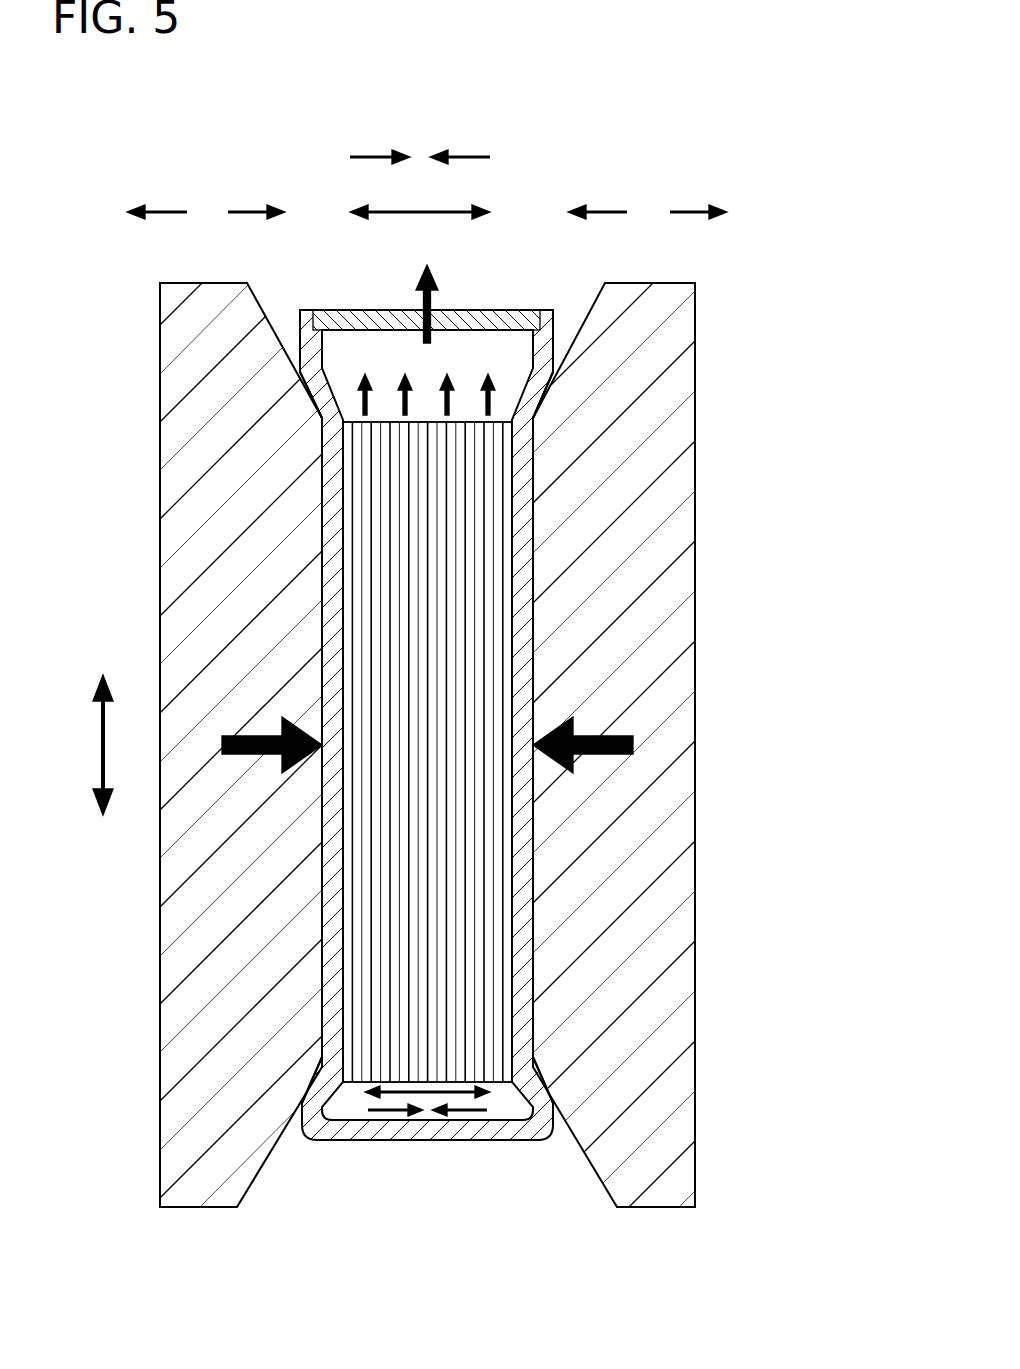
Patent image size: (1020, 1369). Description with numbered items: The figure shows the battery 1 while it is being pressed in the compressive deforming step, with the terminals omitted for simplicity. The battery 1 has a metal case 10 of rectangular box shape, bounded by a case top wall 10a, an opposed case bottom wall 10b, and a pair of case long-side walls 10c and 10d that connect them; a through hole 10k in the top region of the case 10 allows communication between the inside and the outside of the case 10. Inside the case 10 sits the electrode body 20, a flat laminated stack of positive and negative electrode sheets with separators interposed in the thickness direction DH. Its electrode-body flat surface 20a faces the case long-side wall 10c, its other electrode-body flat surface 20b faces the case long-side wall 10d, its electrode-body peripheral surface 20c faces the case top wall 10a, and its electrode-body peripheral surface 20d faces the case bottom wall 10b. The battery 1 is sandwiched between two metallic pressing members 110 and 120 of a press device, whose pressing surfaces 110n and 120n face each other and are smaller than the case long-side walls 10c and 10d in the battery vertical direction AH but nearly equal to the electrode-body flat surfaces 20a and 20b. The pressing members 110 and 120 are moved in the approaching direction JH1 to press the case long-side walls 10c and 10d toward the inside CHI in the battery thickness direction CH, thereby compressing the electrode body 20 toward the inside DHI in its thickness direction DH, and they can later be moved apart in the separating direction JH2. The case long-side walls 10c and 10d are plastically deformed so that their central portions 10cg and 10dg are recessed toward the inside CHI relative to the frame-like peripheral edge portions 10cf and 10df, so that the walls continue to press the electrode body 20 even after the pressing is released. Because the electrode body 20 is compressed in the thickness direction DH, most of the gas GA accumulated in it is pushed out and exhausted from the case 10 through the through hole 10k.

The battery 1 is at (529, 680).
The case 10 is at (533, 628).
The case top wall 10a is at (360, 310).
The case bottom wall 10b is at (410, 1140).
The case long-side wall 10c is at (330, 603).
The peripheral edge portion 10cf is at (320, 412).
The central portion 10cg is at (322, 480).
The case long-side wall 10d is at (533, 680).
The peripheral edge portion 10df is at (548, 400).
The central portion 10dg is at (533, 500).
The through hole 10k is at (440, 300).
The electrode body 20 is at (462, 838).
The electrode-body flat surface 20a is at (343, 925).
The electrode-body flat surface 20b is at (512, 875).
The electrode-body peripheral surface 20c is at (498, 417).
The electrode-body peripheral surface 20d is at (493, 1083).
The pressing member 110 is at (222, 532).
The pressing surface 110n is at (333, 790).
The pressing member 120 is at (628, 570).
The pressing surface 120n is at (533, 935).
The gas GA is at (422, 270).
The battery thickness direction CH is at (420, 200).
The inside in the battery thickness direction CHI is at (420, 142).
The approaching direction JH1 is at (428, 200).
The separating direction JH2 is at (427, 200).
The battery vertical direction AH is at (86, 745).
The thickness direction DH is at (365, 1092).
The inside in the thickness direction DHI is at (467, 1117).